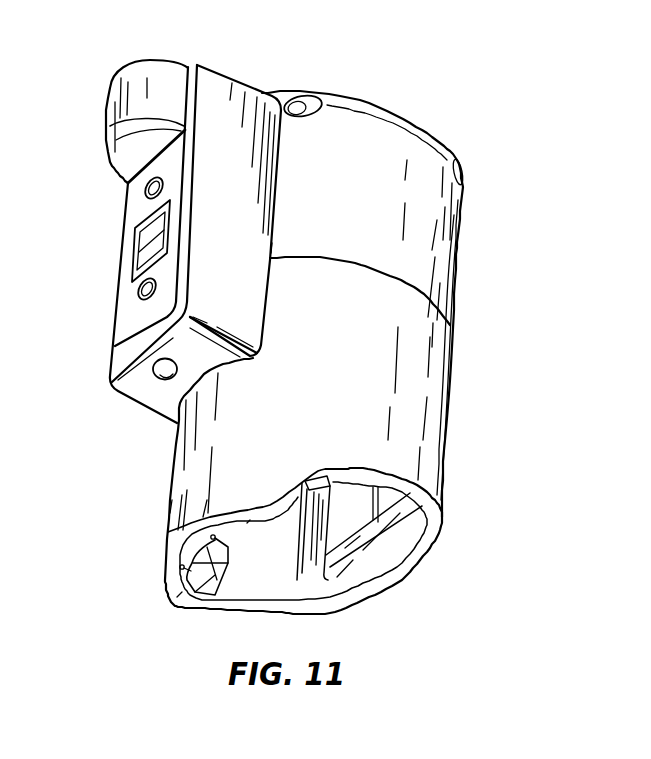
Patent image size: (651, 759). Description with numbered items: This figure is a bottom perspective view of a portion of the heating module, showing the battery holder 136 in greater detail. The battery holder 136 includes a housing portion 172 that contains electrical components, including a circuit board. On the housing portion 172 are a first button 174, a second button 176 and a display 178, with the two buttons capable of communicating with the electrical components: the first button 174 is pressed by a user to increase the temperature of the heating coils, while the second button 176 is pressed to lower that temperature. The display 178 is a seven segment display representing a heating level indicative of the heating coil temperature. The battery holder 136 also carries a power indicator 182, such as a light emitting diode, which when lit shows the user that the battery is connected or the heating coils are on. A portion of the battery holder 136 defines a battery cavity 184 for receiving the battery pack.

The battery holder 136 is at (280, 338).
The housing portion 172 is at (420, 390).
The first button 174 is at (145, 192).
The second button 176 is at (140, 289).
The display 178 is at (134, 243).
The power indicator 182 is at (150, 389).
The battery cavity 184 is at (263, 560).